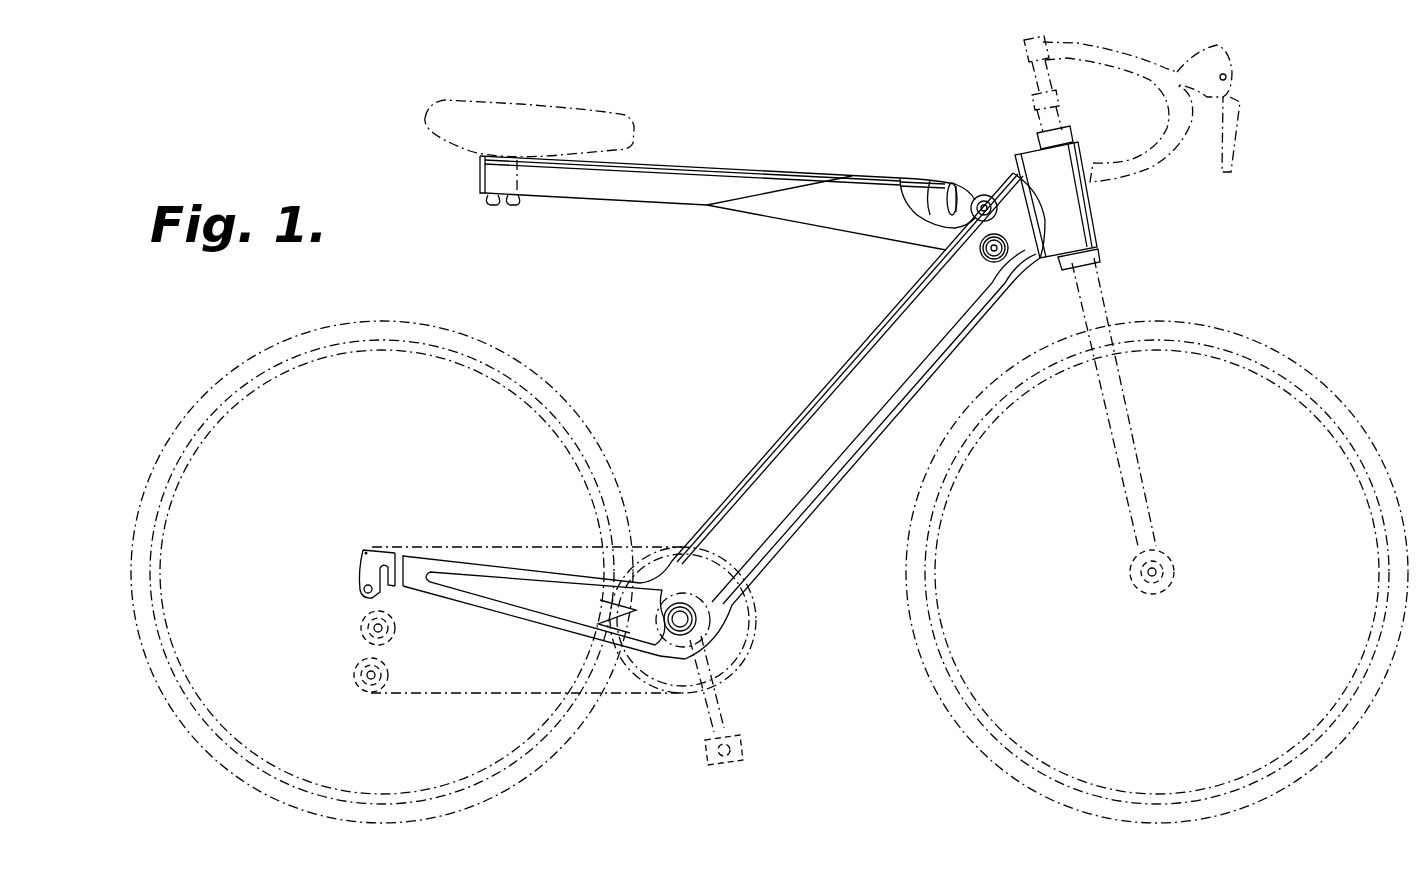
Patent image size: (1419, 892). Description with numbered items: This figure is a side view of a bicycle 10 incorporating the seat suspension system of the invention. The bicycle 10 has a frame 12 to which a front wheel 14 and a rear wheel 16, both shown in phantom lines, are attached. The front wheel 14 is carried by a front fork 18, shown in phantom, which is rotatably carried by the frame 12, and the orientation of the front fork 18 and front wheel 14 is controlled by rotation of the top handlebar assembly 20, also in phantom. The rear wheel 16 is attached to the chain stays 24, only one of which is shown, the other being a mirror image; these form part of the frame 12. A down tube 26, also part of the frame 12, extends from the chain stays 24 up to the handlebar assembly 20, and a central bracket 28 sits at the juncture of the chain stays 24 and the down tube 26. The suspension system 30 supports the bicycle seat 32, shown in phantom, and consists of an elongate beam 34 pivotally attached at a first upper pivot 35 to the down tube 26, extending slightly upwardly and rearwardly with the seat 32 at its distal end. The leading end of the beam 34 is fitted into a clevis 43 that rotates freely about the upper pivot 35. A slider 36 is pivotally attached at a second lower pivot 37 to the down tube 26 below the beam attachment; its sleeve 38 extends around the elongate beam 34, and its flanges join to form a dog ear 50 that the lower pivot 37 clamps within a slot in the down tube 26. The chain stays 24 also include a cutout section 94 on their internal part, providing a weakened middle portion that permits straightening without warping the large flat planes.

The bicycle 10 is at (1296, 213).
The frame 12 is at (796, 557).
The front wheel 14 is at (1268, 335).
The rear wheel 16 is at (398, 323).
The front fork 18 is at (1100, 288).
The top handlebar assembly 20 is at (1118, 57).
The chain stays 24 is at (437, 570).
The down tube 26 is at (792, 447).
The central bracket 28 is at (680, 601).
The suspension system 30 is at (790, 87).
The bicycle seat 32 is at (508, 103).
The elongate beam 34 is at (570, 187).
The first upper pivot 35 is at (985, 190).
The slider 36 is at (870, 220).
The second lower pivot 37 is at (994, 260).
The sleeve 38 is at (890, 177).
The clevis 43 is at (955, 185).
The dog ear 50 is at (982, 250).
The cutout section 94 is at (473, 592).